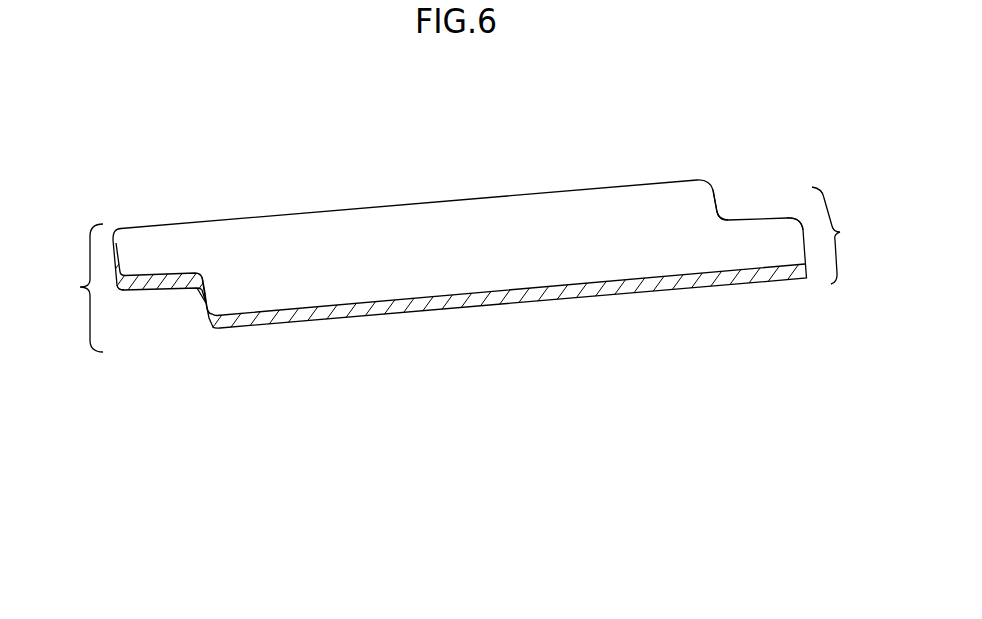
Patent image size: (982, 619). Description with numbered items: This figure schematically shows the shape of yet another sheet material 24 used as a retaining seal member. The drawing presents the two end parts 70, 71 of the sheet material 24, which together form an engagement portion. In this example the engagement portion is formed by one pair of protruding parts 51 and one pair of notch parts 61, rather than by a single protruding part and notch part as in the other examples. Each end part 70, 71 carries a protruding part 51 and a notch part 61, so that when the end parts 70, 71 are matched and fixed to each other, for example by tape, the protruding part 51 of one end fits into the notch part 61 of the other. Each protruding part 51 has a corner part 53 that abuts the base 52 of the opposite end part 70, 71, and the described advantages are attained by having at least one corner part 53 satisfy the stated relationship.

The sheet material 24 is at (477, 100).
The protruding part 51 is at (138, 242).
The base 52 is at (191, 305).
The corner part 53 is at (121, 305).
The notch part 61 is at (177, 310).
The end part 70 is at (840, 235).
The end part 71 is at (78, 288).